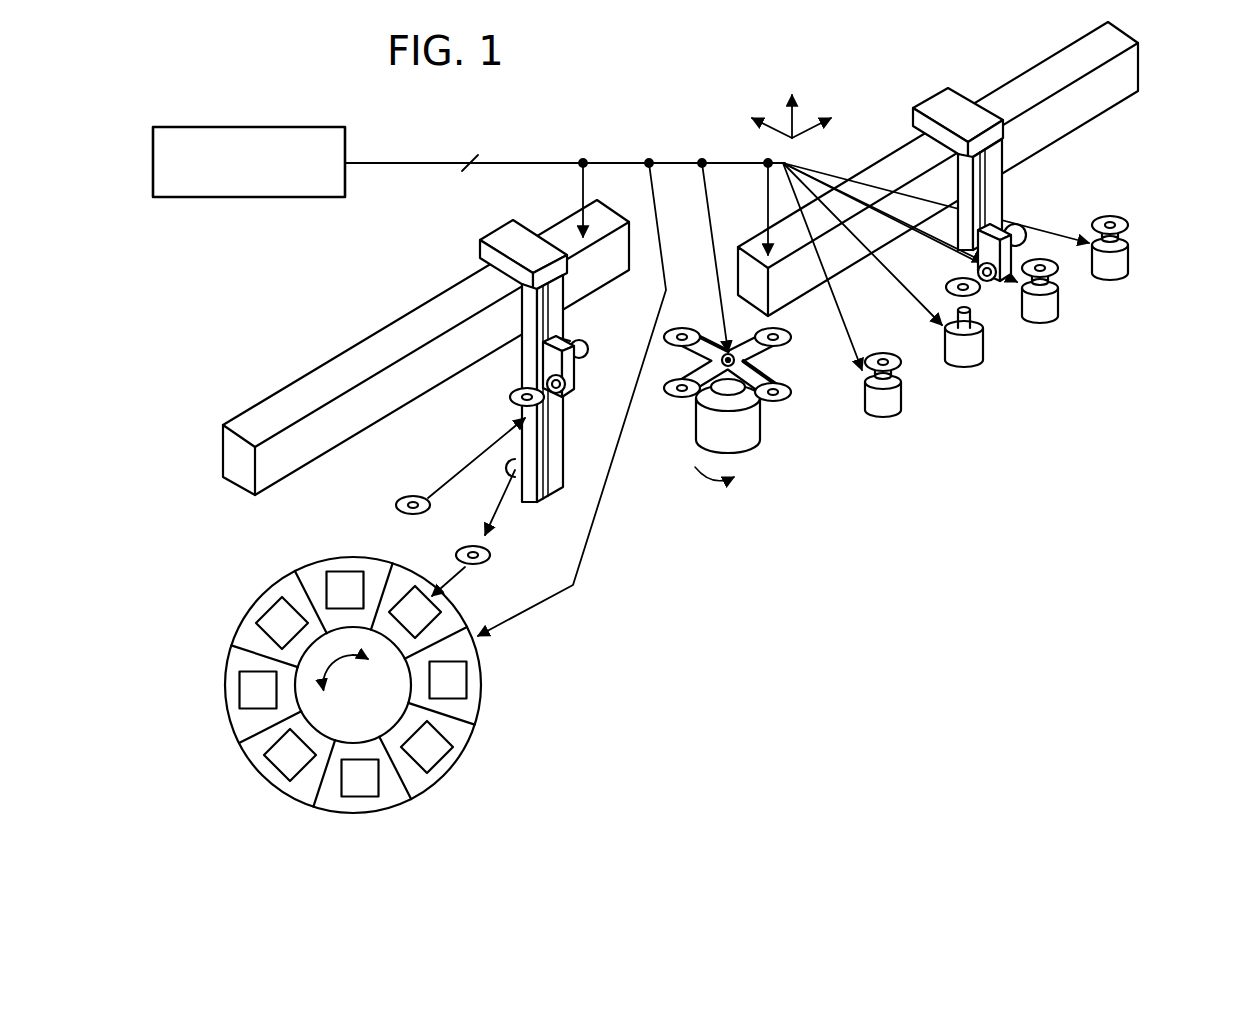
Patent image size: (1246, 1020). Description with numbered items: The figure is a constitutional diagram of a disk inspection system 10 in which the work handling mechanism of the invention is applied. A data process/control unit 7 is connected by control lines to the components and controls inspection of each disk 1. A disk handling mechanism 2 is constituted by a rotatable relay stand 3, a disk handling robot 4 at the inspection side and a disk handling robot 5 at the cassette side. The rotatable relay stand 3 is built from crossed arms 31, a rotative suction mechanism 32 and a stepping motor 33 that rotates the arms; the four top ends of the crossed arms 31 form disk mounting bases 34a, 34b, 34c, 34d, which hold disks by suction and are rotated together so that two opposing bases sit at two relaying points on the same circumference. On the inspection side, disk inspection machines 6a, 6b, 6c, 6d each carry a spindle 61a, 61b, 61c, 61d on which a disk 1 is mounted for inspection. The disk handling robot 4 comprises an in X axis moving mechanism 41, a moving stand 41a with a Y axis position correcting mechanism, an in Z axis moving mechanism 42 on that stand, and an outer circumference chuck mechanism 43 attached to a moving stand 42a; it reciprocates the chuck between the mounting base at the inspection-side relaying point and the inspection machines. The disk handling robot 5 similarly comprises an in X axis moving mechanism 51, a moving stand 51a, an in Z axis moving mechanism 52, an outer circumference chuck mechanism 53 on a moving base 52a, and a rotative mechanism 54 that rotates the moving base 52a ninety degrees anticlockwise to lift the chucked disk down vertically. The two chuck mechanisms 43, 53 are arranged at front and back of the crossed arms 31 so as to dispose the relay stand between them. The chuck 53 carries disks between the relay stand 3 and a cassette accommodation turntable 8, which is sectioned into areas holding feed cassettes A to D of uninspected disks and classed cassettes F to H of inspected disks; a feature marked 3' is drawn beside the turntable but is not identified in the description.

The disk 1 is at (691, 330).
The disk handling mechanism 2 is at (697, 225).
The rotatable relay stand 3 is at (748, 443).
The chip transfer position 3' is at (416, 561).
The disk handling robot at inspection side 4 is at (979, 169).
The disk handling robot at cassette side 5 is at (426, 369).
The disk inspection machine 6a is at (906, 425).
The disk inspection machine 6b is at (989, 372).
The disk inspection machine 6c is at (1062, 335).
The disk inspection machine 6d is at (1142, 290).
The data process/control unit 7 is at (250, 127).
The cassette accommodation turntable 8 is at (481, 738).
The disk inspection system 10 is at (626, 124).
The crossed arms 31 is at (700, 396).
The rotative suction mechanism 32 is at (727, 381).
The stepping motor 33 is at (752, 437).
The disk mounting base 34a is at (661, 343).
The disk mounting base 34b is at (798, 336).
The disk mounting base 34c is at (791, 388).
The disk mounting base 34d is at (680, 402).
The in X axis moving mechanism 41 is at (1094, 108).
The moving stand 41a is at (927, 108).
The in Z axis moving mechanism 42 is at (1003, 190).
The moving stand 42a is at (979, 256).
The outer circumference chuck mechanism 43 is at (1009, 262).
The in X axis moving mechanism 51 is at (367, 352).
The moving stand 51a is at (500, 237).
The in Z axis moving mechanism 52 is at (495, 399).
The moving base 52a is at (574, 377).
The outer circumference chuck mechanism 53 is at (564, 396).
The rotative mechanism 54 is at (510, 468).
The spindle 61a is at (889, 378).
The spindle 61b is at (989, 342).
The spindle 61c is at (1048, 284).
The spindle 61d is at (1129, 258).